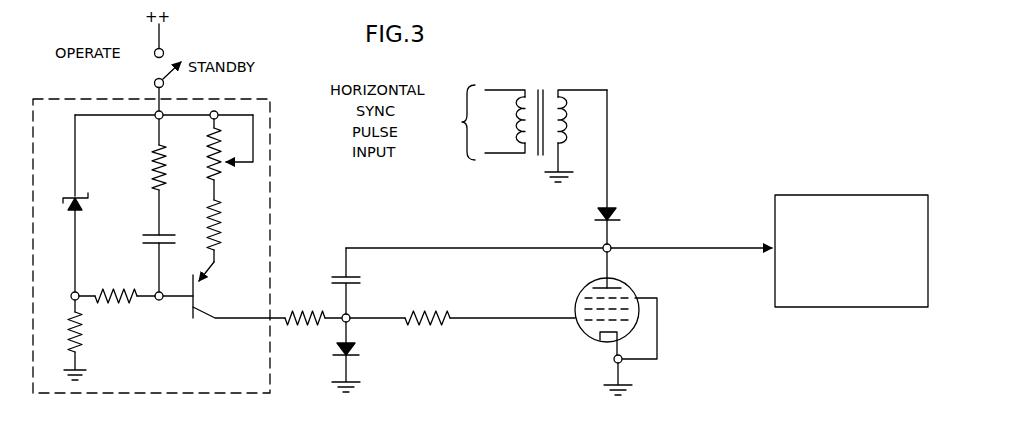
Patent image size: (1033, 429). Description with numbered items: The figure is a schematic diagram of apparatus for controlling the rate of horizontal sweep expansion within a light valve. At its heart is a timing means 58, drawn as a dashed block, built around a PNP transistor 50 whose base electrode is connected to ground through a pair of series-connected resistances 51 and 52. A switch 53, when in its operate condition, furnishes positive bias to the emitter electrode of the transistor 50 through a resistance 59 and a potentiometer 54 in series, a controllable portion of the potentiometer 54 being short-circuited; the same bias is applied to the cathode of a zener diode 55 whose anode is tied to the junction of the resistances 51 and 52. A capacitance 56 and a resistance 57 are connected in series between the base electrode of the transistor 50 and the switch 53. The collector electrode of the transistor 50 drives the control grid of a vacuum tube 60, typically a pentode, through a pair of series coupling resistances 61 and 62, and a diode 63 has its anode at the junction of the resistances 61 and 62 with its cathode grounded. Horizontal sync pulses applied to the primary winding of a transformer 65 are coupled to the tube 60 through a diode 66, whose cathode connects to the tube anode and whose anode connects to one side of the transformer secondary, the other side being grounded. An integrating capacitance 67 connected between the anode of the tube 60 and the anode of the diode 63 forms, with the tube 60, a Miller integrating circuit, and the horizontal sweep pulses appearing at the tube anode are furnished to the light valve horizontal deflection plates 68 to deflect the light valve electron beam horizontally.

The PNP transistor 50 is at (208, 294).
The resistance 51 is at (119, 290).
The resistance 52 is at (85, 340).
The switch 53 is at (175, 77).
The potentiometer 54 is at (204, 161).
The zener diode 55 is at (72, 196).
The capacitance 56 is at (140, 239).
The resistance 57 is at (150, 160).
The timing means 58 is at (270, 131).
The resistance 59 is at (222, 248).
The vacuum tube 60 is at (631, 288).
The coupling resistance 61 is at (309, 308).
The coupling resistance 62 is at (433, 306).
The diode 63 is at (362, 352).
The transformer 65 is at (542, 88).
The diode 66 is at (618, 213).
The integrating capacitance 67 is at (362, 283).
The light valve horizontal deflection plates 68 is at (840, 195).